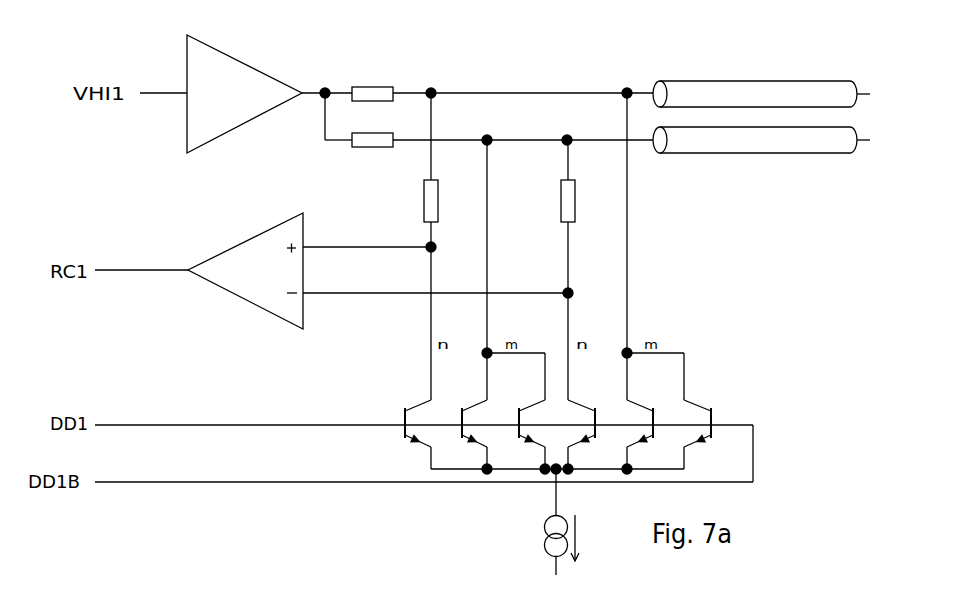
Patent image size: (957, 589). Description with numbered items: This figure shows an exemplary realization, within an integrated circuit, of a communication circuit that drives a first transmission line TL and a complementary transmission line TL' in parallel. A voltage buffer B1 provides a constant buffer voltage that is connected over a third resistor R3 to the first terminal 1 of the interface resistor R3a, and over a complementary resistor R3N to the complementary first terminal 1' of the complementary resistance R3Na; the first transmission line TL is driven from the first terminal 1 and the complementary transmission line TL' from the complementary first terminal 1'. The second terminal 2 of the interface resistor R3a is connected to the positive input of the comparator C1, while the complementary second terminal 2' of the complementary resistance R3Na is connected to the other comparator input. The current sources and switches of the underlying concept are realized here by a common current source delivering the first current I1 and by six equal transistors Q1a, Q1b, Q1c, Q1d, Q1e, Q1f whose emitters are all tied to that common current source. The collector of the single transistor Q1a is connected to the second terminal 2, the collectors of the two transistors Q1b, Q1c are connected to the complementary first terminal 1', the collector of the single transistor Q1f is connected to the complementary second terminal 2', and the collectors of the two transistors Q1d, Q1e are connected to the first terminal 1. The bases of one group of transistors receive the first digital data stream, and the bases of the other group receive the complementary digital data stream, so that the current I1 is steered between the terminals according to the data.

The first terminal 1 is at (432, 82).
The complementary first terminal 1' is at (498, 129).
The second terminal 2 is at (440, 246).
The complementary second terminal 2' is at (583, 292).
The voltage buffer B1 is at (244, 94).
The comparator C1 is at (245, 271).
The third resistor R3 is at (372, 82).
The complementary third resistor R3N is at (372, 129).
The complementary resistance R3Na is at (404, 201).
The interface resistor R3a is at (547, 201).
The first transmission line TL is at (761, 81).
The complementary transmission line TL' is at (761, 130).
The transistor Q1a is at (407, 424).
The transistor Q1b is at (463, 424).
The transistor Q1c is at (521, 424).
The transistor Q1d is at (708, 424).
The transistor Q1e is at (650, 424).
The transistor Q1f is at (592, 424).
The first current I1 is at (578, 522).